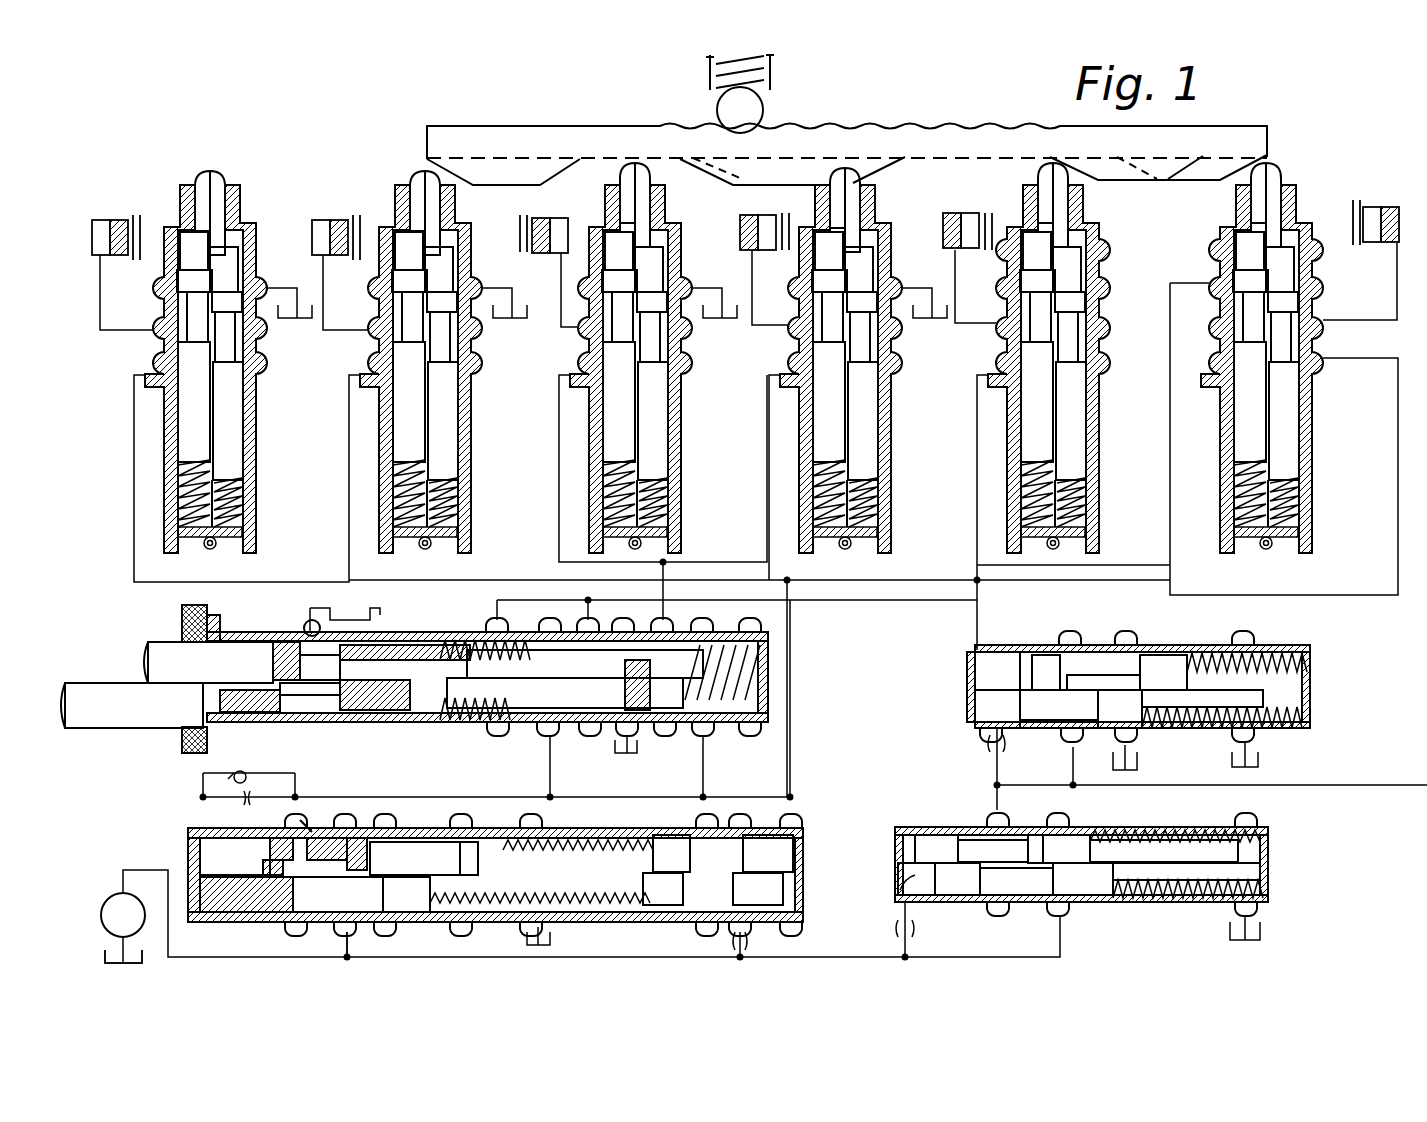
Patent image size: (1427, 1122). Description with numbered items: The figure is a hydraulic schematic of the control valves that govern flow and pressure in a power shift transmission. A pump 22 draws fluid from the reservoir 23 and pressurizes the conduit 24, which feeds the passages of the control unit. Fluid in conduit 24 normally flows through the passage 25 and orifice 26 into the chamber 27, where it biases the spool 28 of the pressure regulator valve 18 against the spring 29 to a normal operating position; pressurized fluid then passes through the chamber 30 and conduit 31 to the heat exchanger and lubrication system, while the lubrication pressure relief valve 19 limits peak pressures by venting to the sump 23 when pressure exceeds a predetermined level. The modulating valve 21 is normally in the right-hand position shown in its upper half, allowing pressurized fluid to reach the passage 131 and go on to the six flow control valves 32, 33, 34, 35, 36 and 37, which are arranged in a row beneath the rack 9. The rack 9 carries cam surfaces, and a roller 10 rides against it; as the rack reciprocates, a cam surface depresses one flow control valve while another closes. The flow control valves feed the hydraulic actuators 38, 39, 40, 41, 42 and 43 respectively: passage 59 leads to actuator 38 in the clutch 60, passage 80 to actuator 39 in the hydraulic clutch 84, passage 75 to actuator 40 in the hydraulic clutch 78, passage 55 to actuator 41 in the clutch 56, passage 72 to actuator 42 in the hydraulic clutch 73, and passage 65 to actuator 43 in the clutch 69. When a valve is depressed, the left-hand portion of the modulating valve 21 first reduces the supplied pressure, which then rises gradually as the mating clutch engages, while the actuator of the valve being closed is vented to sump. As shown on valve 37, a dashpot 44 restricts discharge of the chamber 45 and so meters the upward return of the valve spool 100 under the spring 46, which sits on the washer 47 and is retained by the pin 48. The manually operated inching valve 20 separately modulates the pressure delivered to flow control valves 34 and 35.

The rack 9 is at (1278, 130).
The cam roller 10 is at (763, 109).
The pressure regulator valve 18 is at (1281, 859).
The lubrication pressure relief valve 19 is at (1325, 685).
The inching valve 20 is at (781, 685).
The modulating valve 21 is at (816, 851).
The pump 22 is at (104, 904).
The reservoir 23 is at (104, 956).
The conduit 24 is at (278, 957).
The passage 25 is at (792, 957).
The orifice 26 is at (895, 930).
The chamber 27 is at (893, 888).
The spool 28 is at (958, 895).
The spring 29 is at (1265, 886).
The chamber 30 is at (990, 818).
The conduit 31 is at (985, 755).
The flow control valve 32 is at (1280, 193).
The flow control valve 33 is at (1078, 187).
The flow control valve 34 is at (870, 196).
The flow control valve 35 is at (645, 188).
The flow control valve 36 is at (439, 193).
The flow control valve 37 is at (226, 197).
The hydraulic actuator 38 is at (1383, 207).
The hydraulic actuator 39 is at (970, 213).
The hydraulic actuator 40 is at (768, 216).
The hydraulic actuator 41 is at (558, 218).
The hydraulic actuator 42 is at (340, 220).
The hydraulic actuator 43 is at (122, 220).
The dashpot 44 is at (236, 363).
The chamber 45 is at (255, 262).
The spring 46 is at (237, 493).
The washer 47 is at (238, 527).
The pin 48 is at (224, 561).
The passage 55 is at (560, 330).
The clutch 56 is at (511, 237).
The passage 59 is at (1397, 300).
The clutch 60 is at (1349, 188).
The passage 65 is at (115, 332).
The clutch 69 is at (152, 206).
The passage 72 is at (328, 332).
The hydraulic clutch 73 is at (369, 206).
The hydraulic passage 75 is at (752, 328).
The hydraulic clutch 78 is at (785, 263).
The passage 80 is at (958, 330).
The hydraulic clutch 84 is at (990, 263).
The valve spool 100 is at (228, 369).
The passage 131 is at (792, 740).